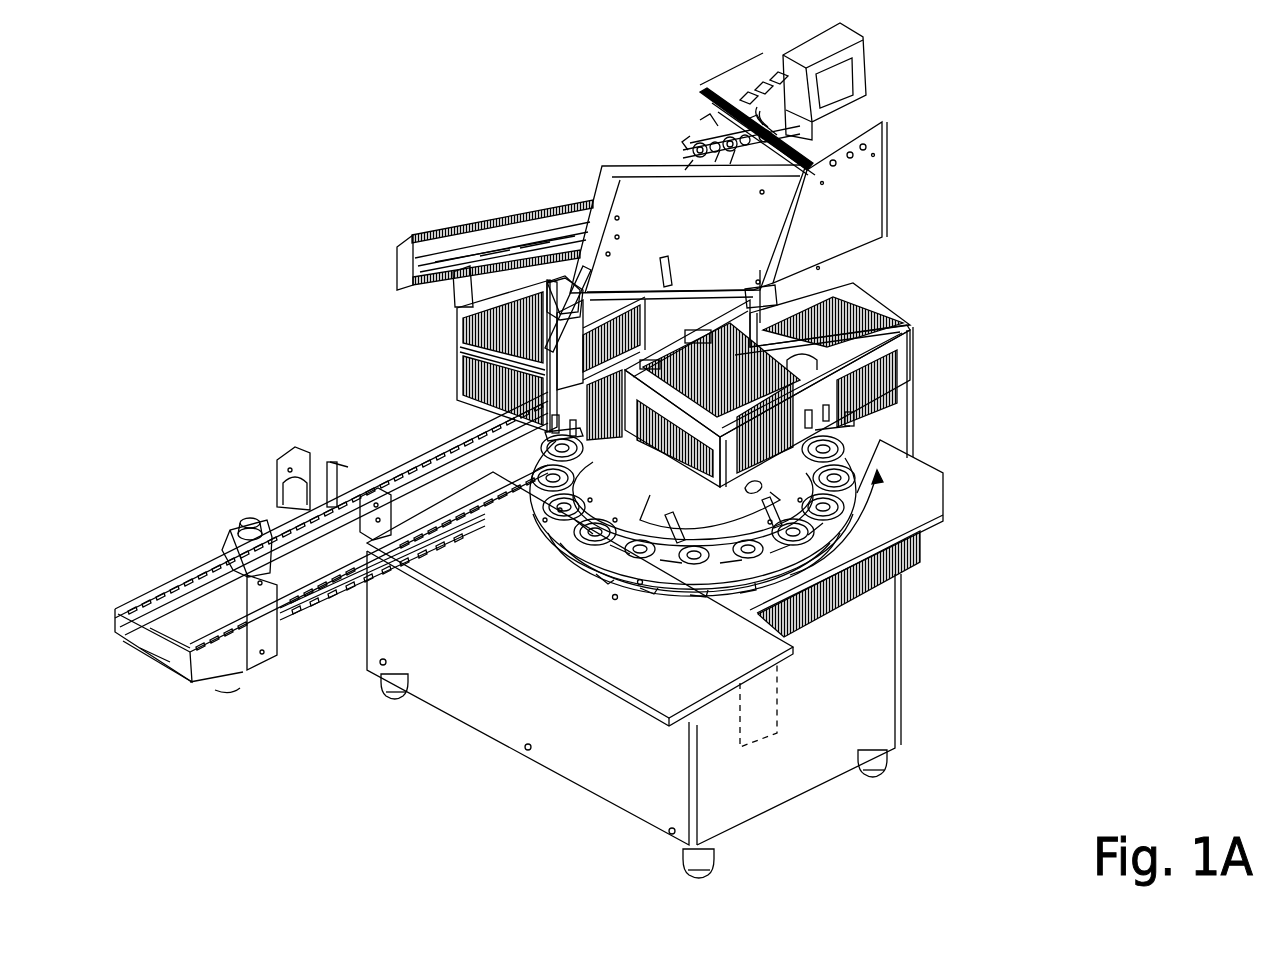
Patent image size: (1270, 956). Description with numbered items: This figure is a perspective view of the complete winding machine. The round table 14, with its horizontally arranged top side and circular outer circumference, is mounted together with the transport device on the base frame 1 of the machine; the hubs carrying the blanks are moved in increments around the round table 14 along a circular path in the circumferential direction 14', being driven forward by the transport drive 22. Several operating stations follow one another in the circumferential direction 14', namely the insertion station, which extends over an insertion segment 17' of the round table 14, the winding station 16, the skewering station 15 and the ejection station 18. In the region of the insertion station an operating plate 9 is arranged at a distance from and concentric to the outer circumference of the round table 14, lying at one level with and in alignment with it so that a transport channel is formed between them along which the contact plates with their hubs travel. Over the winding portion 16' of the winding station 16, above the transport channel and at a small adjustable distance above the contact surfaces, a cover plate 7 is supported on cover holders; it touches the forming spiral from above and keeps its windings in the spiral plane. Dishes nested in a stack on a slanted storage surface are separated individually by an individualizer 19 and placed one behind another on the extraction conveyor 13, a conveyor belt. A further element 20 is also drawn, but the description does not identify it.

The base frame 1 is at (952, 620).
The cover plate 7 is at (732, 520).
The operating plate 9 is at (580, 599).
The extraction conveyor 13 is at (423, 483).
The round table 14 is at (693, 500).
The circumferential direction 14' is at (846, 538).
The skewering station 15 is at (925, 367).
The winding station 16 is at (695, 606).
The winding portion 16' is at (710, 505).
The insertion segment 17' is at (693, 504).
The ejection station 18 is at (673, 323).
The individualizer 19 is at (494, 236).
The control panel 20 is at (784, 153).
The transport drive 22 is at (760, 710).